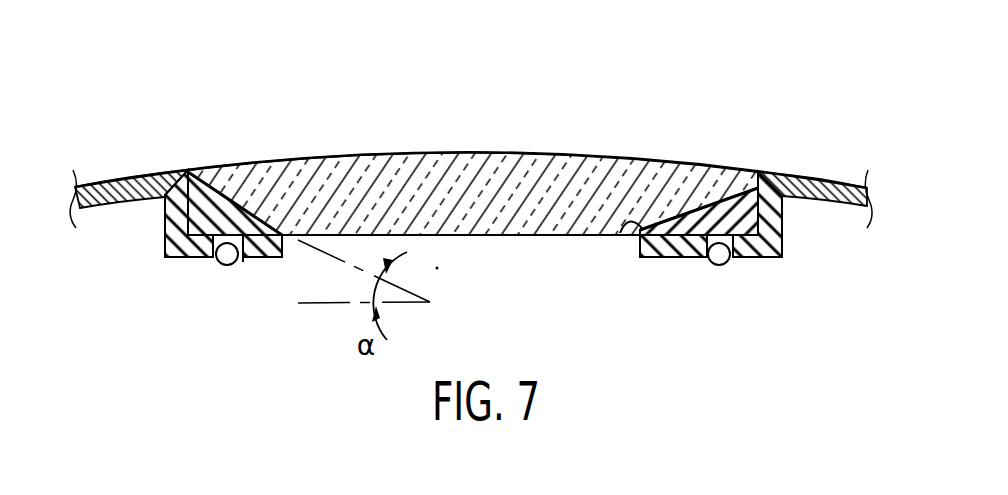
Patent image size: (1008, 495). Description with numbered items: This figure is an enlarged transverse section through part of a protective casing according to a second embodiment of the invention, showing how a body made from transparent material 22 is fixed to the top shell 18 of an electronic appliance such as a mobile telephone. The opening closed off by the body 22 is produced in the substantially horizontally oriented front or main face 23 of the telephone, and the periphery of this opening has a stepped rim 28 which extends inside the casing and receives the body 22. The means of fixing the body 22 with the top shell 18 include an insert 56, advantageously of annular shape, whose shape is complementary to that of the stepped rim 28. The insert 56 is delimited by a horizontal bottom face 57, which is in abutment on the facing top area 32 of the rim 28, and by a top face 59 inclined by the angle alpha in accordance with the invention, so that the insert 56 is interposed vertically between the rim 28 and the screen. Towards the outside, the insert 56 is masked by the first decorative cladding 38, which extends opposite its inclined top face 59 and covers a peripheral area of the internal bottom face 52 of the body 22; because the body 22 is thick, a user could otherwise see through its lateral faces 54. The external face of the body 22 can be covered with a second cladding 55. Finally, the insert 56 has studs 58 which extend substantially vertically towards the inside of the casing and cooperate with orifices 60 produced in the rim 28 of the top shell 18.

The top shell 18 is at (121, 150).
The body made from transparent material 22 is at (462, 182).
The front or main face 23 is at (155, 168).
The stepped rim 28 is at (168, 260).
The top area 32 is at (613, 235).
The first decorative cladding 38 is at (215, 166).
The internal bottom face 52 is at (490, 237).
The lateral faces 54 is at (775, 172).
The second cladding 55 is at (578, 148).
The insert 56 is at (167, 237).
The horizontal bottom face 57 is at (669, 258).
The studs 58 is at (244, 262).
The inclined top face 59 is at (282, 180).
The orifices 60 is at (222, 258).